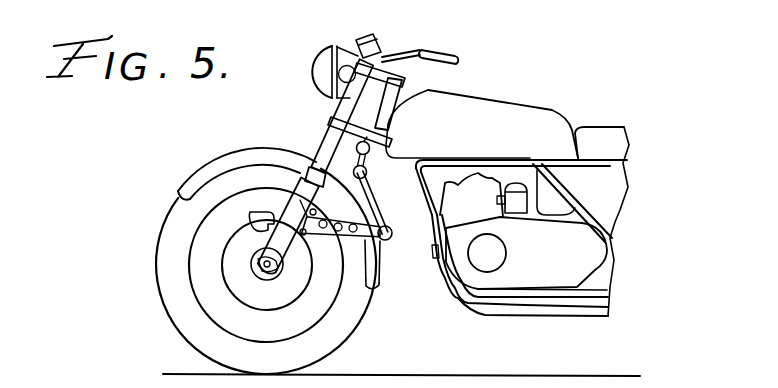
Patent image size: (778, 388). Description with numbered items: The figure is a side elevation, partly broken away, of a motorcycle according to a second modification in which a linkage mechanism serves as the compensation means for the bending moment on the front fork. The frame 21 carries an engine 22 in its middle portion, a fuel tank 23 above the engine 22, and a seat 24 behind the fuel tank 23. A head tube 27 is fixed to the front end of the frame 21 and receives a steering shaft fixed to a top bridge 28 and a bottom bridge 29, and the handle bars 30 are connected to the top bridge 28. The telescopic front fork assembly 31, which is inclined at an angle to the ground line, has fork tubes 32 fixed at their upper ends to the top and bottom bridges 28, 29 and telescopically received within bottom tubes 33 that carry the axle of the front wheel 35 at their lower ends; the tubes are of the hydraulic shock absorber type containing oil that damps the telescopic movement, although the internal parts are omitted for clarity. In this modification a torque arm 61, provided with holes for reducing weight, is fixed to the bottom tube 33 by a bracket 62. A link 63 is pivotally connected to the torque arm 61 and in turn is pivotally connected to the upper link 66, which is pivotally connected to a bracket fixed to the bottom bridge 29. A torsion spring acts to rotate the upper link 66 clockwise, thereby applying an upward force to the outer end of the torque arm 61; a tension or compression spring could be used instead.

The frame 21 is at (517, 160).
The engine 22 is at (435, 275).
The fuel tank 23 is at (515, 113).
The seat 24 is at (605, 135).
The head tube 27 is at (447, 90).
The top bridge 28 is at (377, 58).
The bottom bridge 29 is at (333, 120).
The handle bars 30 is at (412, 53).
The telescopic front fork assembly 31 is at (276, 191).
The fork tubes 32 is at (325, 142).
The bottom tubes 33 is at (277, 233).
The front wheel 35 is at (173, 310).
The torque arm 61 is at (357, 253).
The bracket 62 is at (297, 237).
The link 63 is at (383, 212).
The link 66 is at (368, 160).